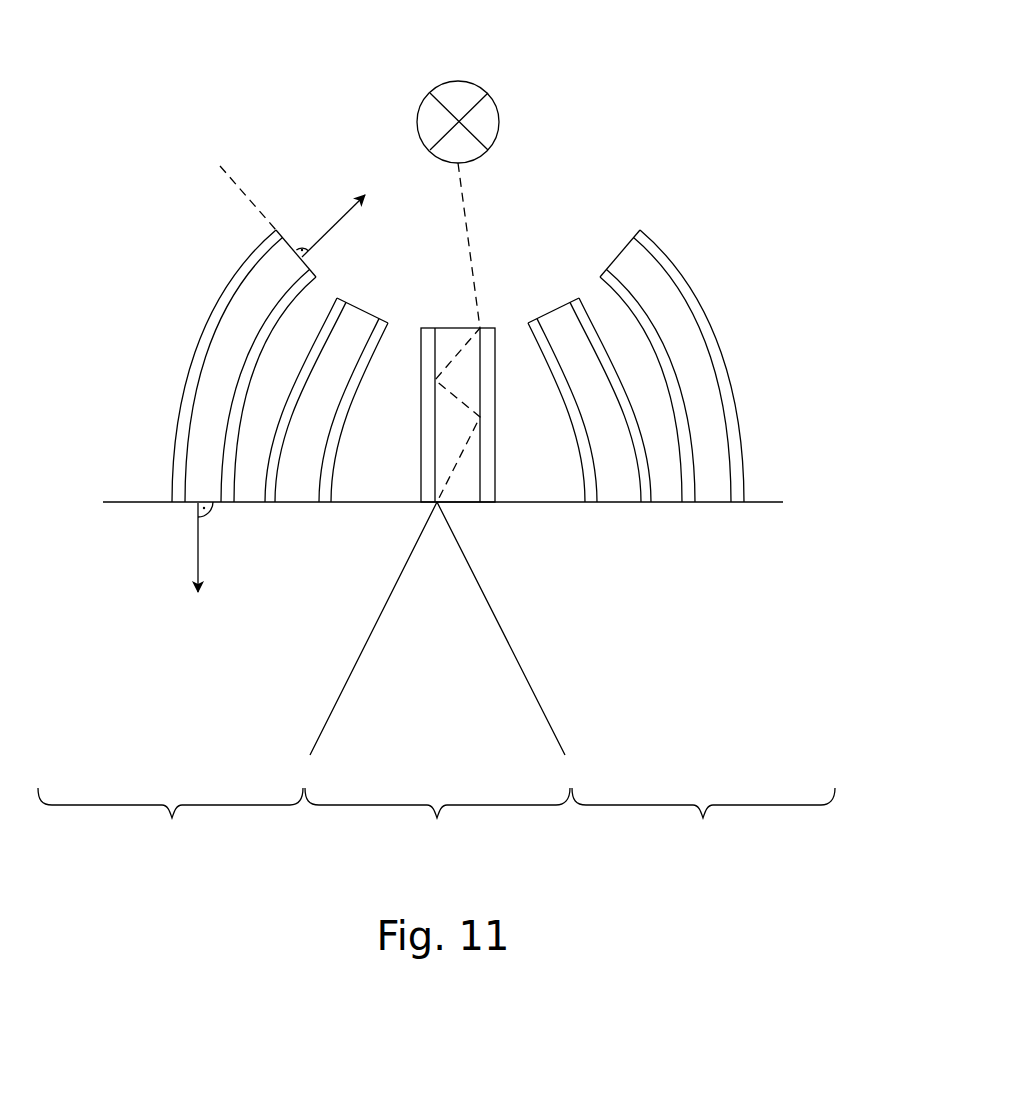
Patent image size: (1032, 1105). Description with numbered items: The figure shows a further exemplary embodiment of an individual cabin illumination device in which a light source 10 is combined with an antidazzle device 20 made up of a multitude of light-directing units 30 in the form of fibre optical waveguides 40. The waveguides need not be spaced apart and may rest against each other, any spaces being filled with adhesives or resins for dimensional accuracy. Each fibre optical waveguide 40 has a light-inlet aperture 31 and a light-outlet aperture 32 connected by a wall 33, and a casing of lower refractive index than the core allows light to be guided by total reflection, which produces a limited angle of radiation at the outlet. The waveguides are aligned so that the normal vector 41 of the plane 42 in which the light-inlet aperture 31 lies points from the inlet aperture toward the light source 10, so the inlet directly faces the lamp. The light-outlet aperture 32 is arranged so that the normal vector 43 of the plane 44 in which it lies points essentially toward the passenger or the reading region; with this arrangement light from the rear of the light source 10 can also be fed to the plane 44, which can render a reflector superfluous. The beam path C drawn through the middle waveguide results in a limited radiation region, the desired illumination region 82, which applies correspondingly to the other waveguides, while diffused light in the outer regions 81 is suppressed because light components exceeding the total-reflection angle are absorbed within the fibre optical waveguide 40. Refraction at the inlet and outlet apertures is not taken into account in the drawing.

The light source 10 is at (466, 92).
The antidazzle device 20 is at (843, 432).
The light-directing units 30 is at (648, 235).
The light-inlet aperture 31 is at (296, 220).
The light-outlet aperture 32 is at (190, 512).
The wall 33 is at (708, 505).
The fibre optical waveguide 40 is at (732, 348).
The normal vector 41 is at (336, 182).
The plane 42 is at (221, 167).
The normal vector 43 is at (202, 567).
The plane 44 is at (123, 503).
The regions 81 is at (436, 820).
The illumination region 82 is at (437, 677).
The beam path C is at (464, 200).